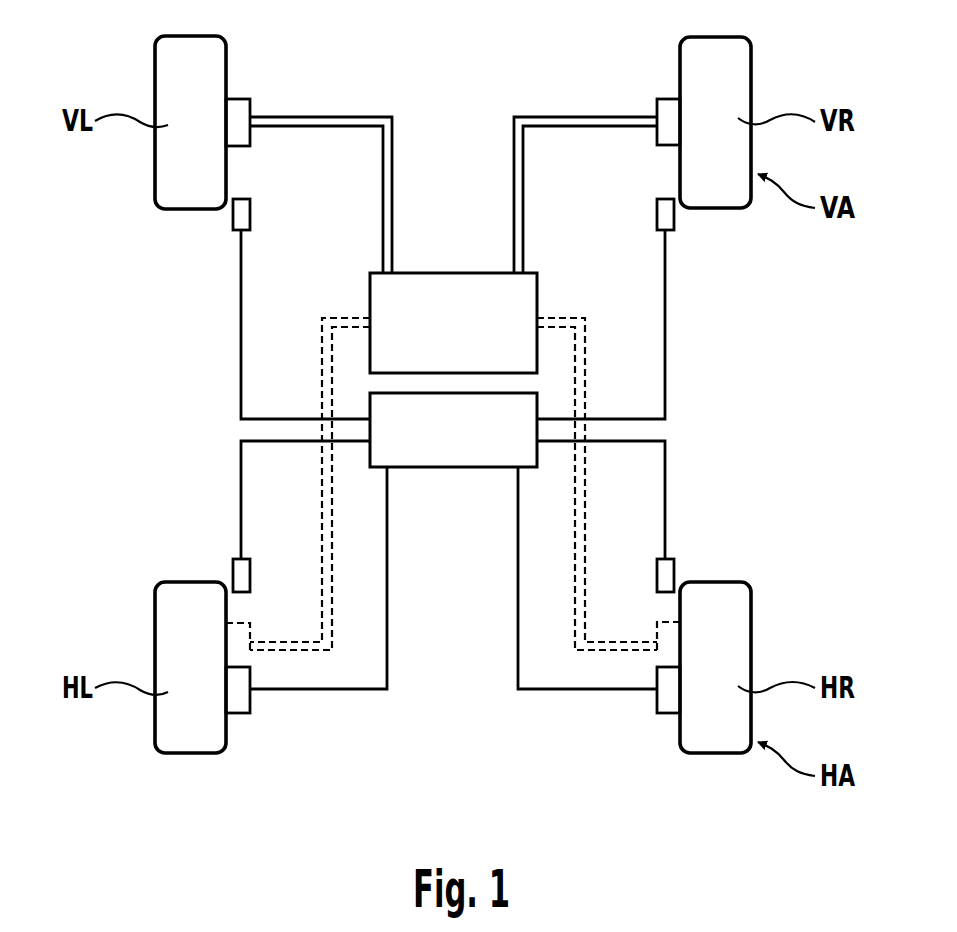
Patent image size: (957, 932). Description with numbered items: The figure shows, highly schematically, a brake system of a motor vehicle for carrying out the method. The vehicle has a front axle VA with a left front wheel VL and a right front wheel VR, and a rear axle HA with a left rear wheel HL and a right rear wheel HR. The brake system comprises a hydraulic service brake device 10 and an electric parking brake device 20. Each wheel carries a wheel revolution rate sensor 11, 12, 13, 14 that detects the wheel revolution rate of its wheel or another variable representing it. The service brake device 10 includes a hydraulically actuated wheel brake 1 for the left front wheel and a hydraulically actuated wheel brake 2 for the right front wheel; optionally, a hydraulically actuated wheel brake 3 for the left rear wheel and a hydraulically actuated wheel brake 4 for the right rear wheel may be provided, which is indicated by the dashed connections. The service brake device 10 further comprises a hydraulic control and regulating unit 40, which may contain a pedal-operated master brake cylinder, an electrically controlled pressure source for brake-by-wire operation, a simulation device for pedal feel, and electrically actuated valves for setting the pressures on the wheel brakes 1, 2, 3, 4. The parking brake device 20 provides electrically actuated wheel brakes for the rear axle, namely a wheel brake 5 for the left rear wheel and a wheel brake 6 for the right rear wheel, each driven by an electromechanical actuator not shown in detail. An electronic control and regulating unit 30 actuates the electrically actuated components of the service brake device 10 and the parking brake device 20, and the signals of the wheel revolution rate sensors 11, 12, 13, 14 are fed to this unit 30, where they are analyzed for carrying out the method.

The hydraulically actuated wheel brake 1 is at (238, 102).
The hydraulically actuated wheel brake 2 is at (670, 108).
The hydraulically actuated wheel brake 3 is at (248, 633).
The hydraulically actuated wheel brake 4 is at (664, 633).
The wheel brake 5 is at (238, 703).
The wheel brake 6 is at (667, 703).
The hydraulic service brake device 10 is at (478, 250).
The wheel revolution rate sensor 11 is at (240, 216).
The wheel revolution rate sensor 12 is at (666, 216).
The wheel revolution rate sensor 13 is at (240, 575).
The wheel revolution rate sensor 14 is at (666, 575).
The electric parking brake device 20 is at (471, 486).
The electronic control and regulating unit 30 is at (425, 455).
The hydraulic control and regulating unit 40 is at (437, 286).